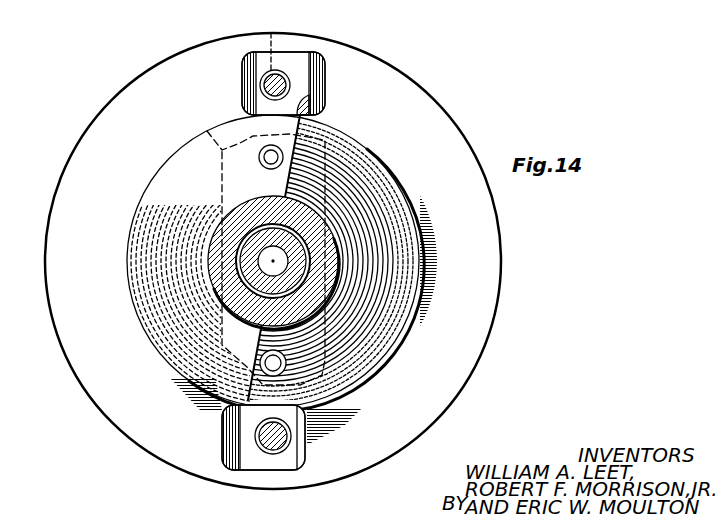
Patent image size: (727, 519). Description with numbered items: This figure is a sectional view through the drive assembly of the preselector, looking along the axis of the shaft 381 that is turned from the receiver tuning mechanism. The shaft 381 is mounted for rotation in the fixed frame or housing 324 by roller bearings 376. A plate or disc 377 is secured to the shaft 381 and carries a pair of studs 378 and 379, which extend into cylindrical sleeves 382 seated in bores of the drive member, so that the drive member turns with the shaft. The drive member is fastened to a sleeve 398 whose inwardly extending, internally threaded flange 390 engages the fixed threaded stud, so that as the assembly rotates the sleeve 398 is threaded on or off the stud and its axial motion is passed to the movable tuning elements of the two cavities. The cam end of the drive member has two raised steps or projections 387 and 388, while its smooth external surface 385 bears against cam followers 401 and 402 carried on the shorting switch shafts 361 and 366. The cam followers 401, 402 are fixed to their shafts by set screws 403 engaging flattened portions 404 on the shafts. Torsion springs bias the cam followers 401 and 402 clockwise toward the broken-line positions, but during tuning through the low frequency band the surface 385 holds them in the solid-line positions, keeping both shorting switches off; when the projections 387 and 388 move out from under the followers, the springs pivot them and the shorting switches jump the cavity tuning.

The fixed frame or housing 324 is at (490, 283).
The shorting switch shaft 361 is at (258, 86).
The shorting switch shaft 366 is at (276, 440).
The roller bearings 376 is at (237, 285).
The plate or disc 377 is at (207, 131).
The stud 378 is at (258, 157).
The stud 379 is at (300, 366).
The shaft 381 is at (263, 270).
The cylindrical sleeves 382 is at (262, 168).
The smooth external surface 385 is at (300, 100).
The raised step or projection 387 is at (303, 140).
The raised step or projection 388 is at (262, 343).
The internally threaded flange 390 is at (240, 257).
The sleeve 398 is at (215, 222).
The cam follower 401 is at (310, 62).
The cam follower 402 is at (232, 456).
The set screw 403 is at (271, 33).
The flattened portion 404 is at (262, 73).